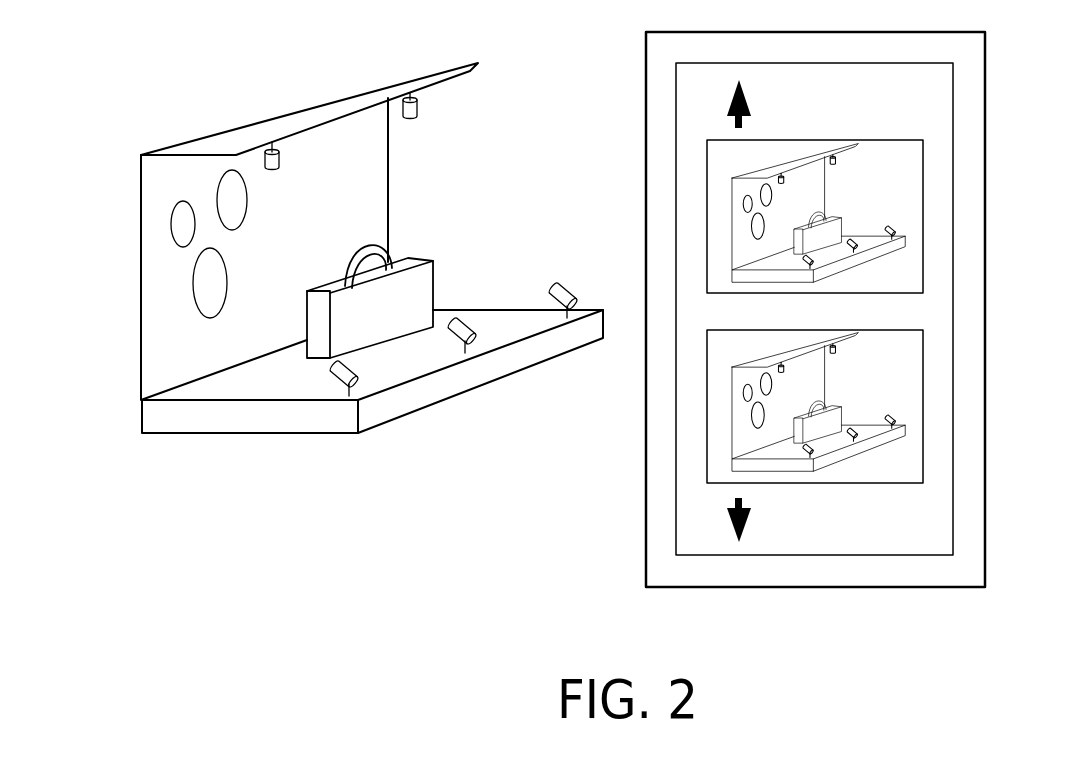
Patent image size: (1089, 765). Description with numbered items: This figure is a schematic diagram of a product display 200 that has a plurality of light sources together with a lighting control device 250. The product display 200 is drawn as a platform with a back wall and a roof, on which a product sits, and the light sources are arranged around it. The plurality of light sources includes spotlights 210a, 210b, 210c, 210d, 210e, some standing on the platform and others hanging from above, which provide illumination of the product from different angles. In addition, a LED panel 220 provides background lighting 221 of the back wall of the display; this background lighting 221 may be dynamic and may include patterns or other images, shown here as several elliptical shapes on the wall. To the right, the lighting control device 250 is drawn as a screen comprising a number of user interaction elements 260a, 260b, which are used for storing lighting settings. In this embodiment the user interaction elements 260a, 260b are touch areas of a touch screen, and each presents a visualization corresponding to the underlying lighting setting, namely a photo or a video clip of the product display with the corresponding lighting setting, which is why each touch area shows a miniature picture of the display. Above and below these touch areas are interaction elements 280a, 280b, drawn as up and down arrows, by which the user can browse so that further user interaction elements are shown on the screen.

The product display 200 is at (494, 396).
The spotlight 210a is at (333, 372).
The spotlight 210b is at (470, 321).
The spotlight 210c is at (560, 286).
The spotlight 210d is at (280, 158).
The spotlight 210e is at (418, 105).
The LED panel 220 is at (390, 153).
The background lighting 221 is at (195, 243).
The lighting control device 250 is at (846, 603).
The user interaction element 260a is at (923, 195).
The user interaction element 260b is at (923, 380).
The interaction element 280a is at (745, 95).
The interaction element 280b is at (750, 512).